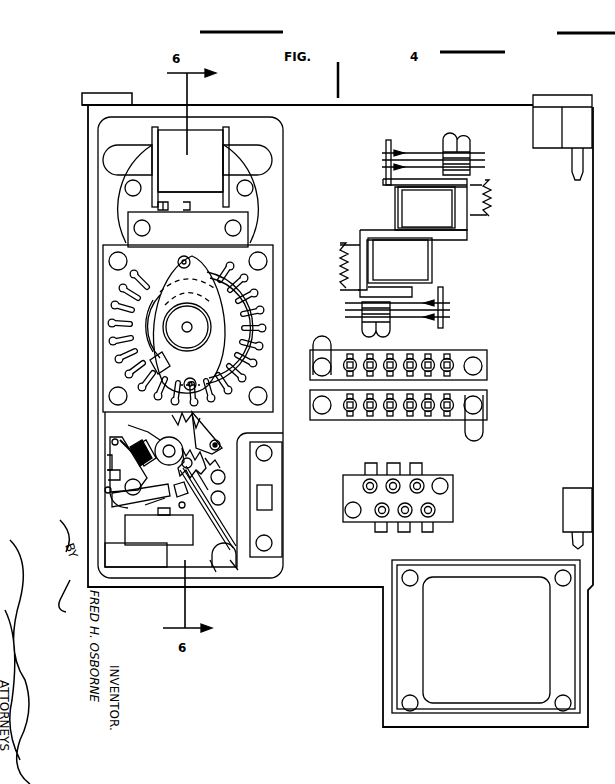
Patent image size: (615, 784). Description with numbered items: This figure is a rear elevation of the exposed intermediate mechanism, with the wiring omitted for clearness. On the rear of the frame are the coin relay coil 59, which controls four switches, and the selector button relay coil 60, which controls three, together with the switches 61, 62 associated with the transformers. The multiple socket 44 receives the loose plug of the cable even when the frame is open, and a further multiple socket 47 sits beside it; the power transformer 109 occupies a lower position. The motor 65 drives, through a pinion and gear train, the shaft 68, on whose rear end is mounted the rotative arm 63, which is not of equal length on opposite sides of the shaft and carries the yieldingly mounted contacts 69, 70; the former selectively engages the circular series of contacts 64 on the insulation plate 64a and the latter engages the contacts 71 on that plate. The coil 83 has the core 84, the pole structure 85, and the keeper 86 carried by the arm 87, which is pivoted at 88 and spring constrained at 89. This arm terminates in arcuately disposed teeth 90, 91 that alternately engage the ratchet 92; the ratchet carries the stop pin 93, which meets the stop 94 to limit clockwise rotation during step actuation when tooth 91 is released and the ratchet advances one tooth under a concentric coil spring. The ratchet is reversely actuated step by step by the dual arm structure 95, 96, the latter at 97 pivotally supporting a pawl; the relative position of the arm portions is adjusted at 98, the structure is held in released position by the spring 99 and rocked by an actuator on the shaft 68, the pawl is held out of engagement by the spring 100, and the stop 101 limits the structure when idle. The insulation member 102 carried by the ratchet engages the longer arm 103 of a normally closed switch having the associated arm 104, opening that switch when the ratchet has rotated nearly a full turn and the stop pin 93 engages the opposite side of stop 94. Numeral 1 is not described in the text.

The housing 1 is at (585, 162).
The multiple socket 44 is at (446, 498).
The multiple socket 47 is at (486, 394).
The coin relay coil 59 is at (413, 207).
The selector button relay coil 60 is at (432, 258).
The switch 61 is at (382, 157).
The switch 62 is at (447, 304).
The rotative arm 63 is at (162, 303).
The circular series of contacts 64 is at (107, 328).
The insulation plate 64a is at (268, 278).
The motor 65 is at (212, 137).
The shaft 68 is at (187, 326).
The yieldingly mounted contact 69 is at (190, 256).
The yieldingly mounted contact 70 is at (193, 378).
The contacts 71 is at (238, 323).
The coil 83 is at (215, 558).
The core 84 is at (159, 526).
The pole structure 85 is at (141, 565).
The keeper 86 is at (118, 502).
The arm 87 is at (118, 452).
The pivot 88 is at (137, 467).
The spring 89 is at (122, 473).
The tooth 90 is at (128, 440).
The tooth 91 is at (180, 495).
The ratchet 92 is at (190, 451).
The stop pin 93 is at (128, 425).
The stop 94 is at (156, 442).
The arm portion 95 is at (189, 445).
The arm portion 96 is at (214, 440).
The pawl pivot 97 is at (218, 447).
The adjustment 98 is at (109, 463).
The spring 99 is at (222, 497).
The spring 100 is at (200, 478).
The stop 101 is at (216, 452).
The insulation member 102 is at (160, 496).
The longer arm 103 is at (238, 560).
The switch arm 104 is at (213, 562).
The power transformer 109 is at (505, 690).